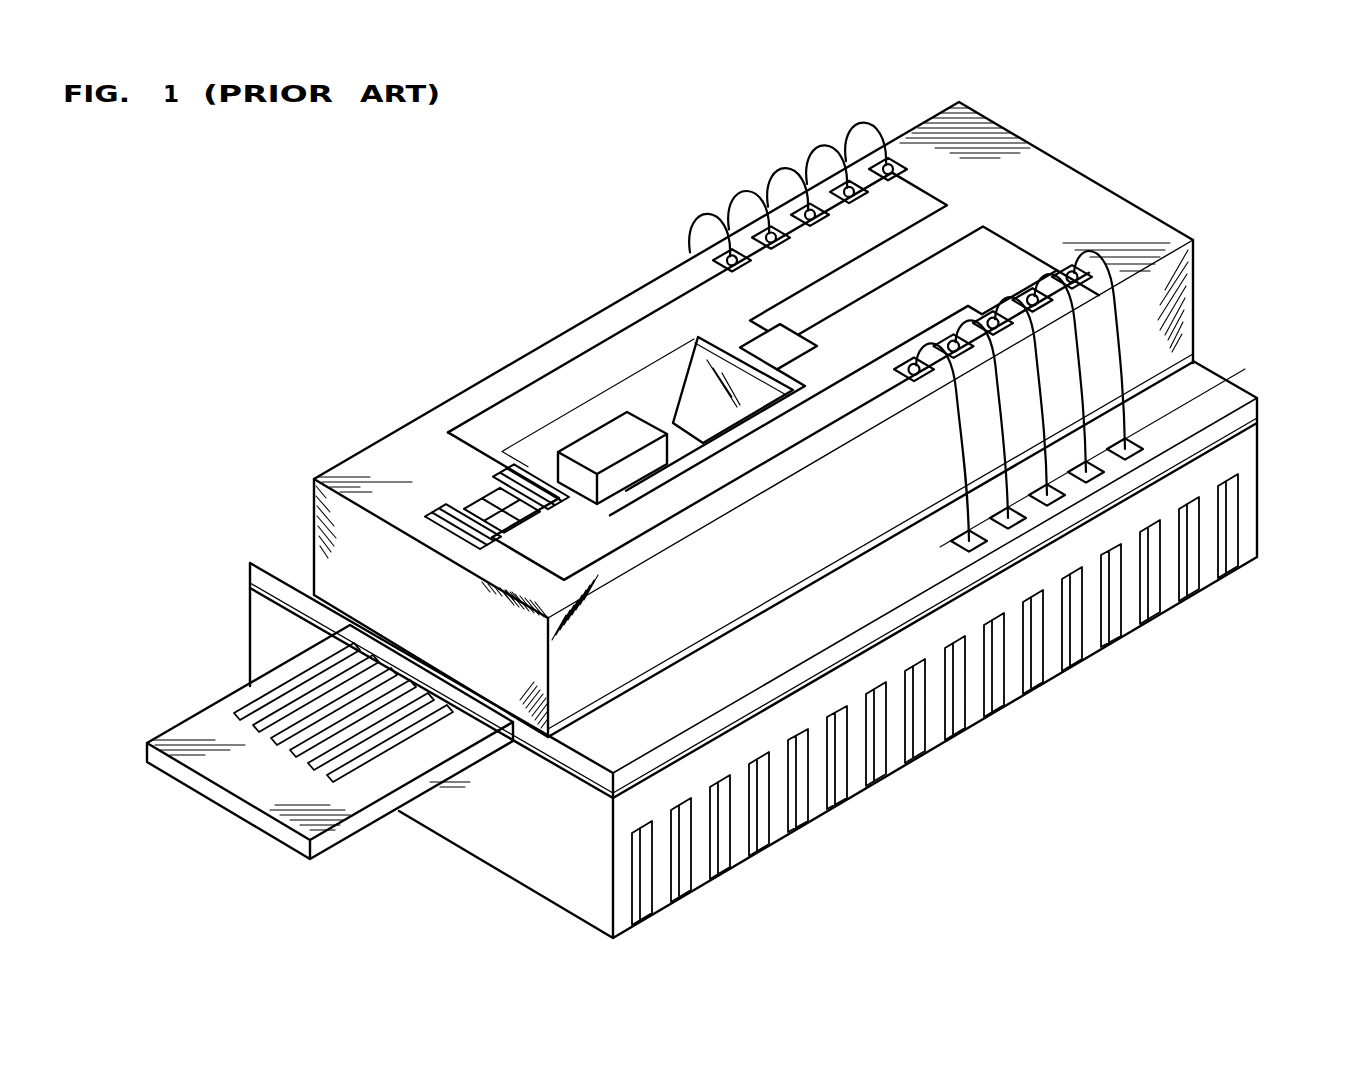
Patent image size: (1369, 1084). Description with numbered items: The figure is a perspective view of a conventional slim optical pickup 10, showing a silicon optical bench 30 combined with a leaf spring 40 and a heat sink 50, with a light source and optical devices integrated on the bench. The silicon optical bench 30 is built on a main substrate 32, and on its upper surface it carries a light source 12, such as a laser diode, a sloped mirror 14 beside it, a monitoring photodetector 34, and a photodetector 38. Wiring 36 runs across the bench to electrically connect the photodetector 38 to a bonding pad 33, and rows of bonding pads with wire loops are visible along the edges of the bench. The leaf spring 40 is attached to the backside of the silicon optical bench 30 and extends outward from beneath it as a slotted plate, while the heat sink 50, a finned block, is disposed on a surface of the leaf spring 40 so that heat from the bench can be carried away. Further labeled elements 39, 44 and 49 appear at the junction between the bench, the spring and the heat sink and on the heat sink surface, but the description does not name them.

The slim optical pickup 10 is at (745, 82).
The light source 12 is at (608, 440).
The sloped mirror 14 is at (697, 382).
The silicon optical bench 30 is at (1092, 166).
The main substrate 32 is at (1044, 190).
The bonding pad 33 is at (1095, 272).
The monitoring photodetector 34 is at (760, 350).
The wiring 36 is at (503, 397).
The photodetector 38 is at (471, 485).
The thermal sheet 39 is at (537, 738).
The leaf spring 40 is at (208, 688).
The pads 44 is at (1125, 438).
The thermal plate 49 is at (578, 775).
The heat sink 50 is at (1228, 461).